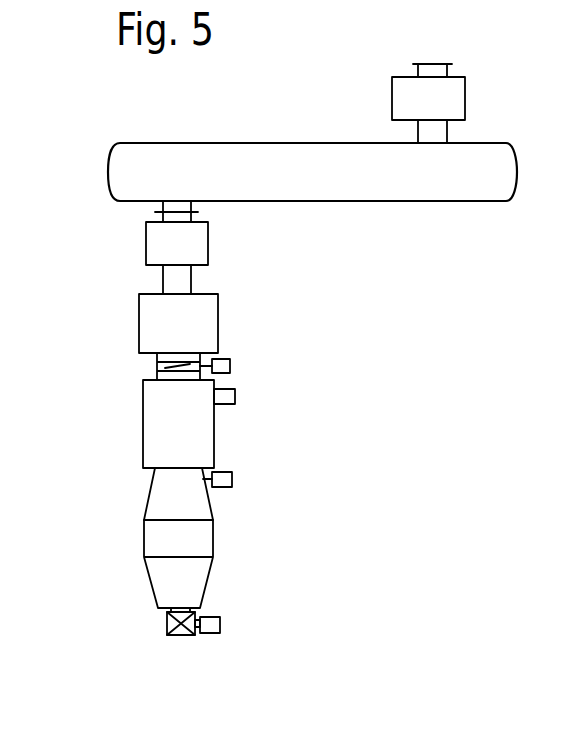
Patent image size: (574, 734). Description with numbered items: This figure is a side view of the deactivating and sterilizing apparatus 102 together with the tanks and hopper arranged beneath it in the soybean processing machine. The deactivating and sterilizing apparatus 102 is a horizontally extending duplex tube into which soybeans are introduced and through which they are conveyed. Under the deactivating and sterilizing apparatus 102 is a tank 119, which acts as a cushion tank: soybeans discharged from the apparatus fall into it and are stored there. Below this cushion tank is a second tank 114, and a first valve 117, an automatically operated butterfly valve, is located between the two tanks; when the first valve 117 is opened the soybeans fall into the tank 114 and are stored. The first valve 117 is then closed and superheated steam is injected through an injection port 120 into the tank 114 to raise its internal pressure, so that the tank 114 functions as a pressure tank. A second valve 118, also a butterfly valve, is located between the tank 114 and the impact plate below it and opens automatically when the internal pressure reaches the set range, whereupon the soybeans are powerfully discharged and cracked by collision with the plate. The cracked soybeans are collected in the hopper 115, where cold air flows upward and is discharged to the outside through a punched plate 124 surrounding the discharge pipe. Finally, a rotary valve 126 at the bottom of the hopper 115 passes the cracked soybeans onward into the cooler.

The deactivating and sterilizing apparatus 102 is at (256, 143).
The tank 119 is at (148, 321).
The first valve 117 is at (230, 364).
The tank 114 is at (150, 438).
The injection port 120 is at (235, 396).
The second valve 118 is at (232, 480).
The punched plate 124 is at (148, 504).
The hopper 115 is at (207, 538).
The rotary valve 126 is at (220, 624).